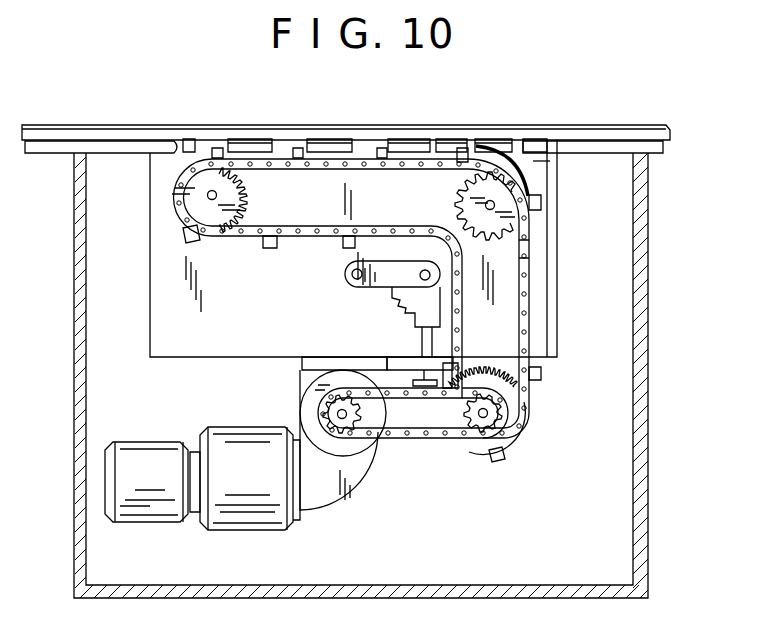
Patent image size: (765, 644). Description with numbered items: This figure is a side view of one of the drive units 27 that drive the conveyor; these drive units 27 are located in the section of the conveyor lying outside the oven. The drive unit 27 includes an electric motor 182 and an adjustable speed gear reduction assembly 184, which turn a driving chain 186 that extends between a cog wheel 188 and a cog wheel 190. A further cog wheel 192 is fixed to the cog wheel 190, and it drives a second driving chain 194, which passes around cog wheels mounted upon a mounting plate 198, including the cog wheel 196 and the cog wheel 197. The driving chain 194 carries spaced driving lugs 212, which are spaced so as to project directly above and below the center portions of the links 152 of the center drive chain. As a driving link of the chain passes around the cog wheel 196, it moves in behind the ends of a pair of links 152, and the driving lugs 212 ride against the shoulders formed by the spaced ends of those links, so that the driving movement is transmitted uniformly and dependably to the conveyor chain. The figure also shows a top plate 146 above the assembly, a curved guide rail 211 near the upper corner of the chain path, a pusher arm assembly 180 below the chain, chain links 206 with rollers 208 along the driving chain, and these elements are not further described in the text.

The drive unit 27 is at (640, 537).
The top plate 146 is at (507, 126).
The links 152 is at (207, 140).
The driving lugs 212 is at (217, 147).
The curved guide rail 211 is at (534, 162).
The mounting plate 198 is at (182, 314).
The driving chain 194 is at (398, 298).
The chain links 206 is at (530, 249).
The chain rollers 208 is at (530, 263).
The cog wheel 196 is at (187, 195).
The cog wheel 197 is at (500, 209).
The pusher arm assembly 180 is at (540, 362).
The driving chain 186 is at (428, 437).
The cog wheel 188 is at (320, 417).
The cog wheel 190 is at (470, 452).
The cog wheel 192 is at (523, 418).
The electric motor 182 is at (150, 500).
The adjustable speed gear reduction assembly 184 is at (257, 512).